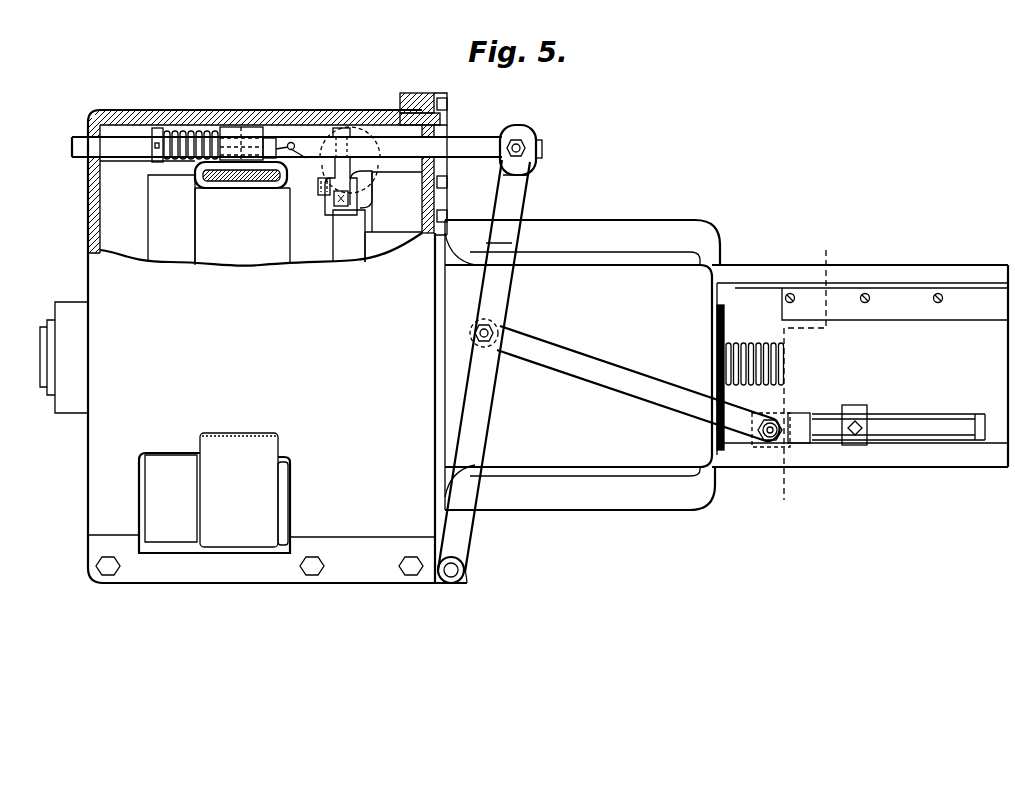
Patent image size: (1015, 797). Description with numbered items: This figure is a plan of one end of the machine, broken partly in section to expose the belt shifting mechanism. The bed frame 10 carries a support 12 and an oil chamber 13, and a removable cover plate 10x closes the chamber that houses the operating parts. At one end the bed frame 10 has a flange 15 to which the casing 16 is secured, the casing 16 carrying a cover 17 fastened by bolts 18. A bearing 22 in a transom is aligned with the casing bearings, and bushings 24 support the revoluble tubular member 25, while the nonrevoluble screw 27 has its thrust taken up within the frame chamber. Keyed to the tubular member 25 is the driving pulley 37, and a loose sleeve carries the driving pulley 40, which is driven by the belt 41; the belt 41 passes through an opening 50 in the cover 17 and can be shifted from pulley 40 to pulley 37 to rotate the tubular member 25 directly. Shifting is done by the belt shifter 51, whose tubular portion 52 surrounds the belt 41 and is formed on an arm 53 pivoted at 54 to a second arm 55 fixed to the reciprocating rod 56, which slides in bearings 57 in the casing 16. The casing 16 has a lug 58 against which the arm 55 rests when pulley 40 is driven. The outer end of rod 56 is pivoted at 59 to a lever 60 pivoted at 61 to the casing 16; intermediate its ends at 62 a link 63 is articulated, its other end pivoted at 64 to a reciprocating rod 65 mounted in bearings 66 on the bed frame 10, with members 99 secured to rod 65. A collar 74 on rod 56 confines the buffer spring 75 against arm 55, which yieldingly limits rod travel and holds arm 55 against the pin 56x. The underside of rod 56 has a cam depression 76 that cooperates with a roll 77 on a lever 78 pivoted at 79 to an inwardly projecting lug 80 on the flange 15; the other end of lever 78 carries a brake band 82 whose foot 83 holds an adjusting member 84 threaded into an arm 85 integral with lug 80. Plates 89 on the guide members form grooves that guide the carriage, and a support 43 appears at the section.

The bed frame 10 is at (876, 265).
The cover plate 10x is at (655, 265).
The support 12 is at (594, 220).
The oil chamber 13 is at (802, 368).
The flange 15 is at (440, 196).
The casing 16 is at (160, 110).
The cover 17 is at (100, 440).
The bolts 18 is at (108, 575).
The bearing 22 is at (725, 322).
The bushings 24 is at (52, 318).
The tubular member 25 is at (40, 340).
The screw 27 is at (782, 370).
The driving pulley 37 is at (168, 258).
The driving pulley 40 is at (262, 258).
The belt 41 is at (214, 183).
The support 43 is at (380, 258).
The opening 50 is at (139, 502).
The belt shifter 51 is at (247, 190).
The tubular portion 52 is at (258, 180).
The arm 53 is at (232, 128).
The pivot 54 is at (293, 142).
The arm 55 is at (245, 130).
The reciprocating rod 56 is at (465, 150).
The pin 56x is at (309, 159).
The bearings 57 is at (88, 125).
The lug 58 is at (272, 138).
The pivot 59 is at (527, 138).
The lever 60 is at (498, 290).
The pivot 61 is at (462, 578).
The pivot 62 is at (496, 330).
The link 63 is at (605, 368).
The pivot 64 is at (766, 446).
The reciprocating rod 65 is at (922, 442).
The bearings 66 is at (800, 445).
The collar 74 is at (156, 128).
The buffer spring 75 is at (192, 135).
The cam depression 76 is at (380, 120).
The roll 77 is at (340, 128).
The lever 78 is at (345, 128).
The pivot 79 is at (318, 188).
The lug 80 is at (392, 195).
The brake band 82 is at (344, 255).
The foot 83 is at (330, 215).
The adjusting member 84 is at (341, 208).
The arm 85 is at (362, 200).
The plates 89 is at (920, 290).
The members 99 is at (855, 405).